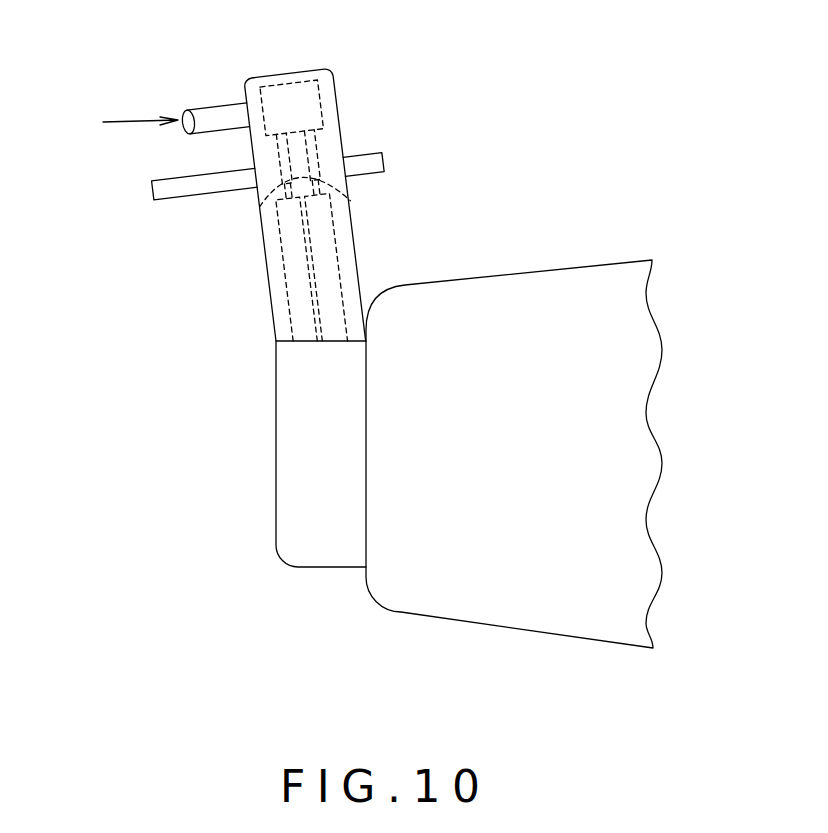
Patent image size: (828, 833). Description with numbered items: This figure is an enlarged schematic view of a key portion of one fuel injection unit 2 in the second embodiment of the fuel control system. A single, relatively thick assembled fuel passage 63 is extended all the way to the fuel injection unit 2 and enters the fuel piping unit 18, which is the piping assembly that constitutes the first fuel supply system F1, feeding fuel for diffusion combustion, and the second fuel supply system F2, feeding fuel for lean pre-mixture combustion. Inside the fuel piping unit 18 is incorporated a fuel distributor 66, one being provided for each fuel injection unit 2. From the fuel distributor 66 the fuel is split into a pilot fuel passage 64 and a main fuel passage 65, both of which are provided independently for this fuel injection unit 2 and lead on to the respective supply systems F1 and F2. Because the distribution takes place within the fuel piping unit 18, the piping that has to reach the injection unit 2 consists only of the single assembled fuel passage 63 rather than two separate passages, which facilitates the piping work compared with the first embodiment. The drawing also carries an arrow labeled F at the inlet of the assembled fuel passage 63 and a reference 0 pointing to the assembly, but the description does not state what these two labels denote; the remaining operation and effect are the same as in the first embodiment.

The force sensor device 0 is at (418, 176).
The fuel injection unit 2 is at (604, 220).
The fuel piping unit 18 is at (335, 97).
The assembled fuel passage 63 is at (218, 104).
The pilot fuel passage 64 is at (267, 203).
The main fuel passage 65 is at (348, 200).
The fuel distributor 66 is at (293, 97).
The applied force F is at (122, 124).
The first fuel supply system F1 is at (292, 267).
The second fuel supply system F2 is at (330, 265).